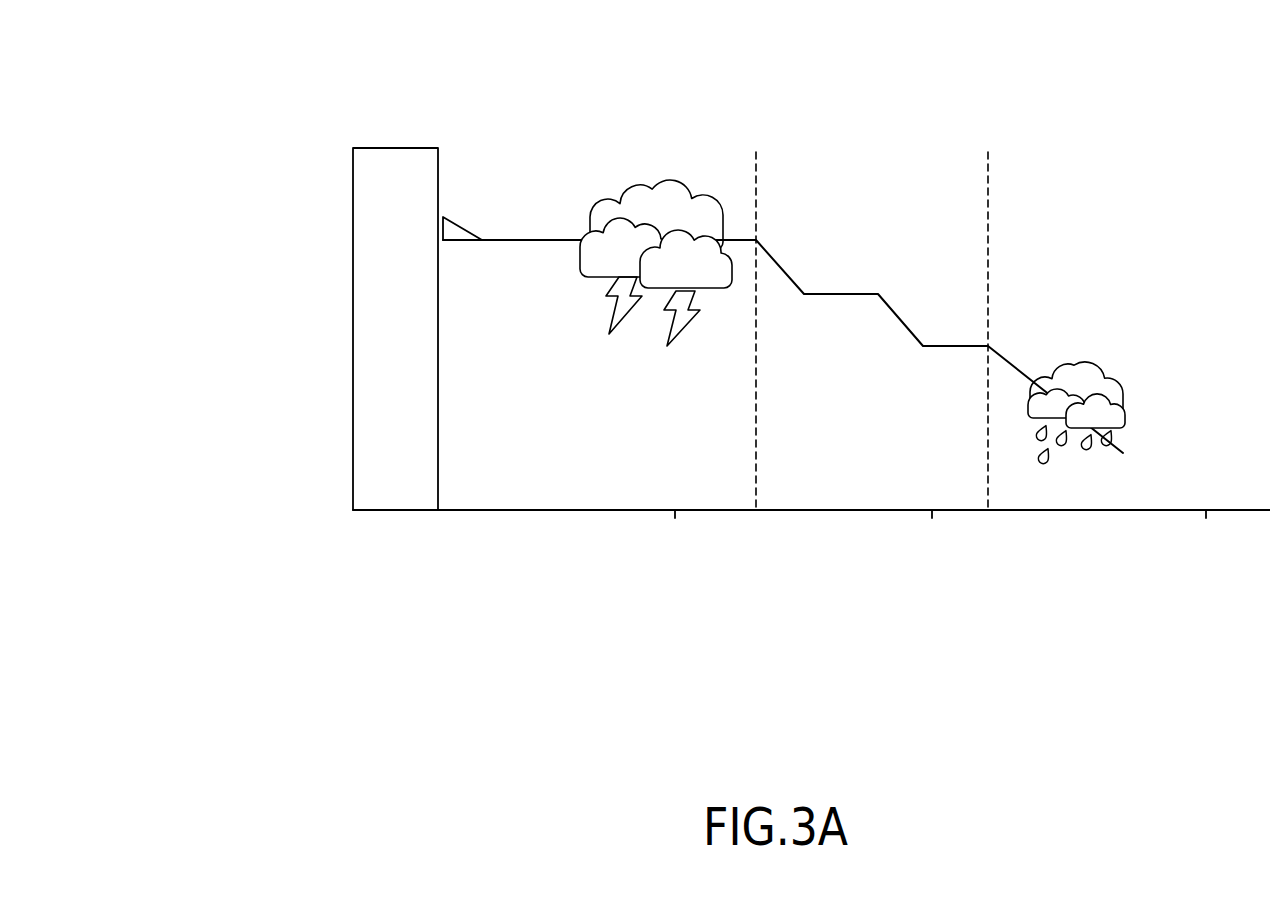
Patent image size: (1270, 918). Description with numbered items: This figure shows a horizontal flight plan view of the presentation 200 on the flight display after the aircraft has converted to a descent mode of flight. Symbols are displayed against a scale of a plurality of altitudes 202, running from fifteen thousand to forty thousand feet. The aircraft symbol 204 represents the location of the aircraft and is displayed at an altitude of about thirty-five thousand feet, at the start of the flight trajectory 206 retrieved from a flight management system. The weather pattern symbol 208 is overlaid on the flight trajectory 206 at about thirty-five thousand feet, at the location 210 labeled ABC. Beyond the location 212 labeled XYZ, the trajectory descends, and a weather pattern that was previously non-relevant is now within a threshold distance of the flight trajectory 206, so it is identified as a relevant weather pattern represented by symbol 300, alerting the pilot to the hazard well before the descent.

The presentation 200 is at (293, 58).
The altitudes 202 is at (353, 148).
The aircraft symbol 204 is at (458, 242).
The flight trajectory 206 is at (548, 240).
The weather pattern symbol 208 is at (660, 184).
The location 210 is at (757, 192).
The location 212 is at (989, 192).
The relevant weather pattern symbol 300 is at (1085, 362).